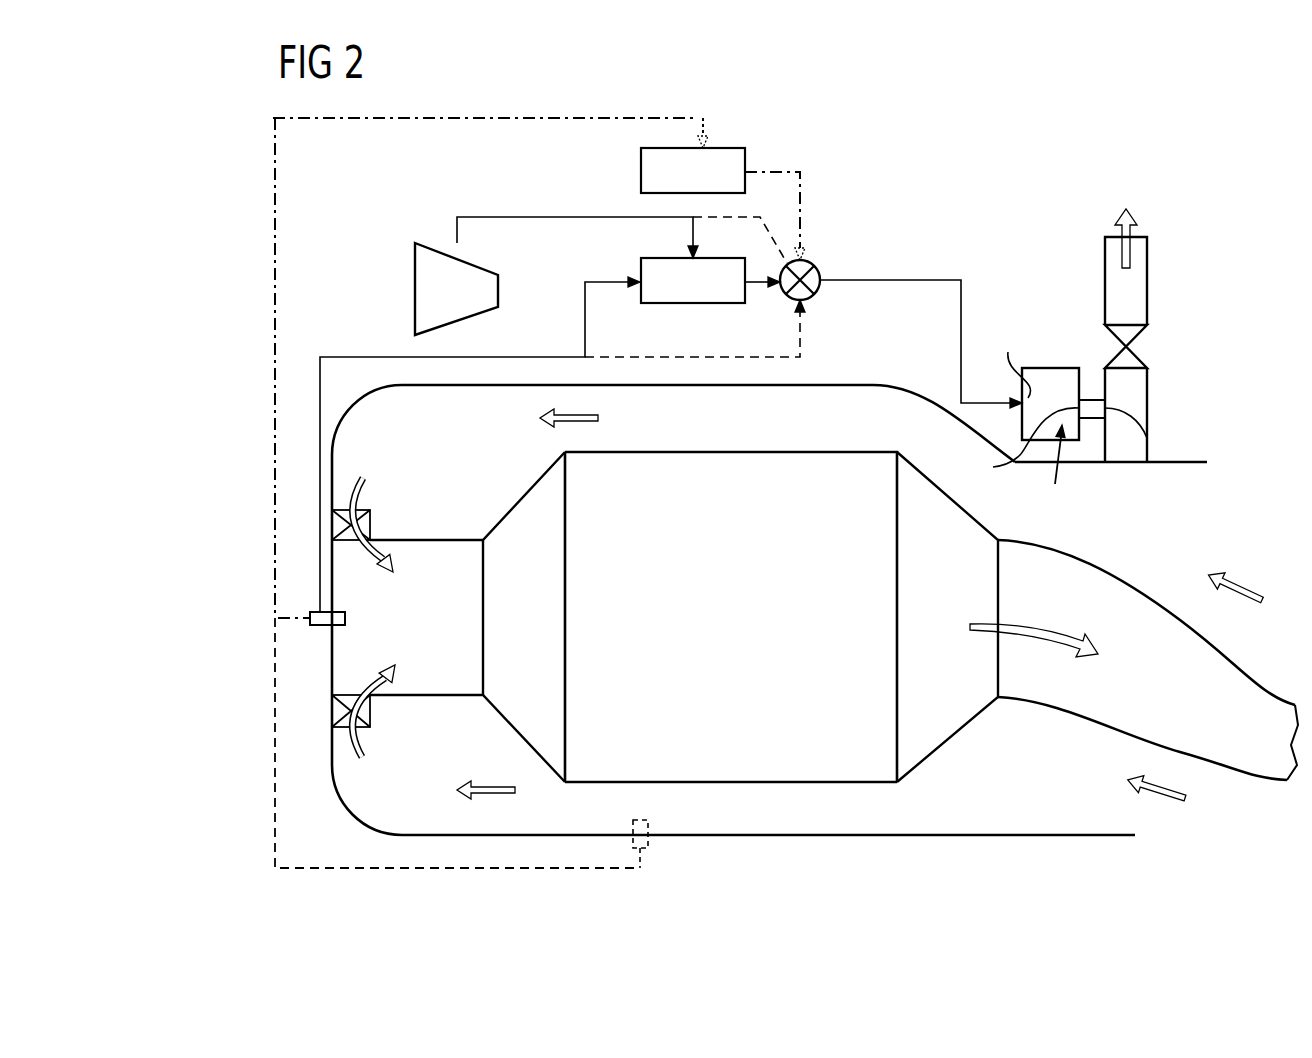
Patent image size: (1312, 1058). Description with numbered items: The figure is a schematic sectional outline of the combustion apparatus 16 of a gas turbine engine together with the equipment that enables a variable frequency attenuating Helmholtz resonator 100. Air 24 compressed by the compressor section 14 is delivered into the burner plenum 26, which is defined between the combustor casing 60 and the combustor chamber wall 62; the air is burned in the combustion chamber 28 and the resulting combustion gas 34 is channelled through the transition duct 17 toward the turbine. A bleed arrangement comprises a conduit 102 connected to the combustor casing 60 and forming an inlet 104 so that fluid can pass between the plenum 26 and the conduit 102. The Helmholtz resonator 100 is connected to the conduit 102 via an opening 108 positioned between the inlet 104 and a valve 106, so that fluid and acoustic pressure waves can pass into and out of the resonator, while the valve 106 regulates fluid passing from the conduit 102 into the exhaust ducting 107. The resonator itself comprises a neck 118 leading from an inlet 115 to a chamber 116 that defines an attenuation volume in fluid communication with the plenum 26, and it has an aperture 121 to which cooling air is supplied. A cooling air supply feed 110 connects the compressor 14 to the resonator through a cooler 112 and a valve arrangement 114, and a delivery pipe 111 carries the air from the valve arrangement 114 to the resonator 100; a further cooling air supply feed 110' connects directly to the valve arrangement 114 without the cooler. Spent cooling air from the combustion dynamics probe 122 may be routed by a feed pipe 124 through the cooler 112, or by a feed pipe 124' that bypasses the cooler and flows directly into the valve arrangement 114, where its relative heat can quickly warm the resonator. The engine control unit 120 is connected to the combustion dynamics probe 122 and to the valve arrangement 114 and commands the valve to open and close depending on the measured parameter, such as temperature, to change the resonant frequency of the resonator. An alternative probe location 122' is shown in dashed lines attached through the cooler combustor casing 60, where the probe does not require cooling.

The compressor section 14 is at (415, 285).
The combustion apparatus 16 is at (548, 884).
The transition duct 17 is at (1105, 712).
The air 24 is at (490, 790).
The burner plenum 26 is at (474, 481).
The combustion chamber 28 is at (862, 468).
The combustion gas 34 is at (1040, 632).
The combustor casing 60 is at (832, 385).
The combustor chamber wall 62 is at (830, 782).
The Helmholtz resonator 100 is at (1030, 265).
The conduit 102 is at (1148, 397).
The inlet 104 is at (1128, 464).
The valve 106 is at (1148, 338).
The exhaust ducting 107 is at (1150, 275).
The opening 108 is at (1148, 438).
The cooling air supply feed 110 is at (577, 207).
The cooling air supply feed 110' is at (783, 223).
The delivery pipe 111 is at (948, 278).
The cooler 112 is at (690, 303).
The valve arrangement 114 is at (815, 266).
The inlet 115 is at (1014, 443).
The chamber 116 is at (1050, 372).
The neck 118 is at (1092, 405).
The engine control unit 120 is at (748, 157).
The aperture 121 is at (1009, 358).
The combustion dynamics probe 122 is at (247, 651).
The combustion dynamics probe 122' is at (724, 893).
The feed pipe 124 is at (480, 444).
The feed pipe 124' is at (695, 367).